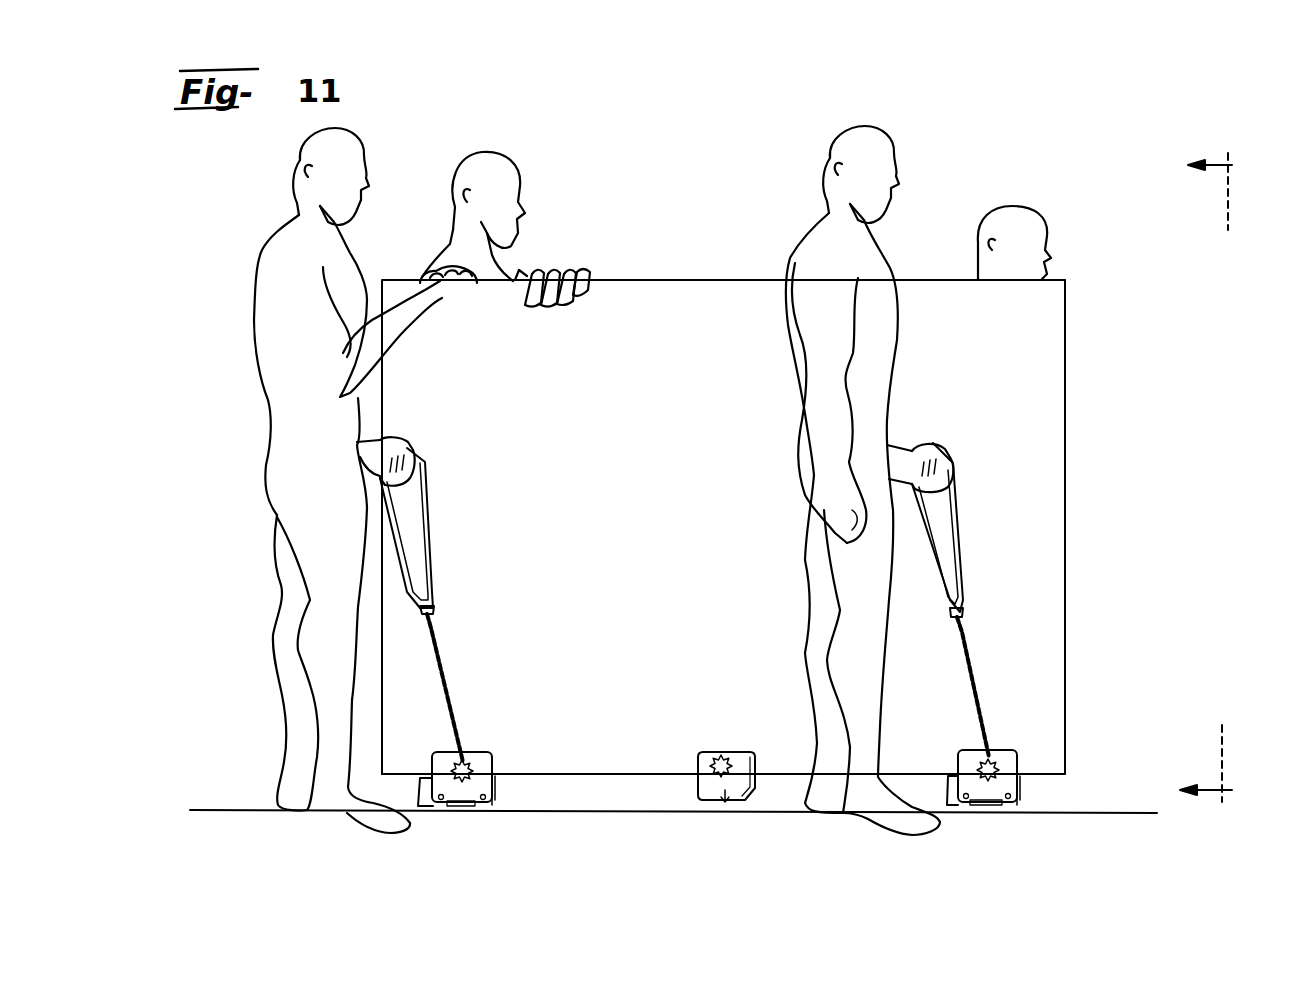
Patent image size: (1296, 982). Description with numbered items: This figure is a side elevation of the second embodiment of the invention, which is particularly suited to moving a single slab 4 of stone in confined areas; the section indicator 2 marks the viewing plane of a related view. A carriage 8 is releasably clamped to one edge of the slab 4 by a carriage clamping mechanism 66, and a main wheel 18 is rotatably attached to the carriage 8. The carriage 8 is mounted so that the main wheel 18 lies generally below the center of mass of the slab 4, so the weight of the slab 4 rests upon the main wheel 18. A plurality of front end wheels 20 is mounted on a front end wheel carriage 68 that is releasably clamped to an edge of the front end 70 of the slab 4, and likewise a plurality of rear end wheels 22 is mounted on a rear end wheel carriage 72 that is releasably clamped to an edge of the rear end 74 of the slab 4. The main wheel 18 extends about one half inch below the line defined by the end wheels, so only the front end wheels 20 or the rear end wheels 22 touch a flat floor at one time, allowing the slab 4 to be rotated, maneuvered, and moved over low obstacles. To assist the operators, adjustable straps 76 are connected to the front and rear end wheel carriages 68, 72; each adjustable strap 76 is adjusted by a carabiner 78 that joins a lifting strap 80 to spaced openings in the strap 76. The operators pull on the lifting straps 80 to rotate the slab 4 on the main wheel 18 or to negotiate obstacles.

The section line 2 is at (1223, 478).
The slab 4 is at (631, 482).
The carriage 8 is at (707, 800).
The main wheel 18 is at (728, 810).
The front end wheels 20 is at (1013, 802).
The rear end wheels 22 is at (473, 806).
The carriage clamping mechanism 66 is at (1003, 758).
The front end wheel carriage 68 is at (1018, 780).
The front end 70 is at (1065, 427).
The rear end wheel carriage 72 is at (433, 783).
The rear end 74 is at (382, 652).
The adjustable strap 76 is at (973, 667).
The carabiner 78 is at (962, 612).
The lifting strap 80 is at (960, 537).